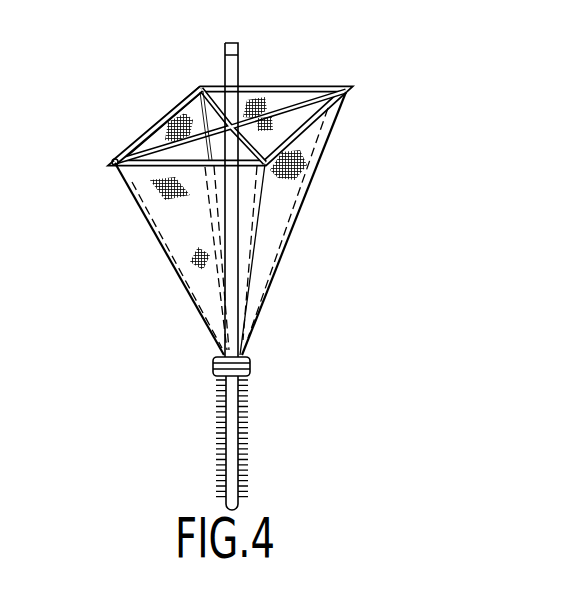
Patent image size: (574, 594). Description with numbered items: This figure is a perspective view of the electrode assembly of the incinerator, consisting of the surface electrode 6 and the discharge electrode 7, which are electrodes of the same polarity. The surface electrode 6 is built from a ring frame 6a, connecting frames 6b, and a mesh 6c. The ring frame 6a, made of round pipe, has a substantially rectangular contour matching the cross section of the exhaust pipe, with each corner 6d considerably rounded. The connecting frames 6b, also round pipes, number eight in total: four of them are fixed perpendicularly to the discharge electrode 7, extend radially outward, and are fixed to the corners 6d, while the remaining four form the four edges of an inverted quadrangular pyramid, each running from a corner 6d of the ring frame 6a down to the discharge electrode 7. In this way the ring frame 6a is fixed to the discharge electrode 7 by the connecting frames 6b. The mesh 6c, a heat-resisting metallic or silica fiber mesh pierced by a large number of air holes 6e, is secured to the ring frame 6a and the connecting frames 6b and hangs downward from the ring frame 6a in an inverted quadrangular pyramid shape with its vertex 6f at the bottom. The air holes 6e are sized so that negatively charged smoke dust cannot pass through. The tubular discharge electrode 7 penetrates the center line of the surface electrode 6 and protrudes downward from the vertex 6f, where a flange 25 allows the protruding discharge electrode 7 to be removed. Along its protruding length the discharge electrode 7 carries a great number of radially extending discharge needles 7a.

The surface electrode 6 is at (350, 89).
The ring frame 6a is at (322, 130).
The connecting frames 6b is at (141, 140).
The mesh 6c is at (198, 276).
The corner 6d is at (113, 165).
The air holes 6e is at (273, 106).
The vertex 6f is at (249, 359).
The flange 25 is at (212, 362).
The discharge electrode 7 is at (240, 432).
The discharge needles 7a is at (222, 472).